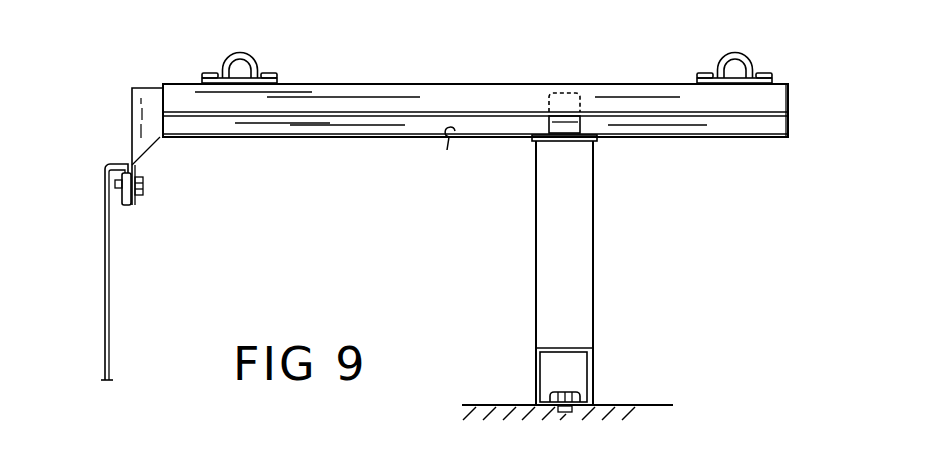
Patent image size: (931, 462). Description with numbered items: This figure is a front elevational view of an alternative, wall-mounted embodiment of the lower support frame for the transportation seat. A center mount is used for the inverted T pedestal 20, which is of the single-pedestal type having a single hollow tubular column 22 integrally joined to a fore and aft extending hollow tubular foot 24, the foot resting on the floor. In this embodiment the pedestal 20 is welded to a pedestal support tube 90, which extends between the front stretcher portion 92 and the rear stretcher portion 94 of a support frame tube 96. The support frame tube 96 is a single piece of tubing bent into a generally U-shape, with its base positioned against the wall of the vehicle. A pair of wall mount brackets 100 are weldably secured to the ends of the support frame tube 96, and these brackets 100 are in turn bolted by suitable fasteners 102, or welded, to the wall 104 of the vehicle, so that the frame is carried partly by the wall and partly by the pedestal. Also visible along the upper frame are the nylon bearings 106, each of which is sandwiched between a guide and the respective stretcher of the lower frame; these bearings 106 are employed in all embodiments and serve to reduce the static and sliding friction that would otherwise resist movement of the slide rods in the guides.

The inverted T pedestal 20 is at (565, 270).
The hollow tubular column 22 is at (588, 282).
The hollow tubular foot 24 is at (593, 362).
The pedestal support tube 90 is at (563, 91).
The front stretcher portion 92 is at (432, 83).
The rear stretcher portion 94 is at (444, 153).
The support frame tube 96 is at (377, 140).
The wall mount bracket 100 is at (153, 138).
The fastener 102 is at (137, 202).
The wall 104 is at (104, 221).
The nylon bearing 106 is at (247, 62).